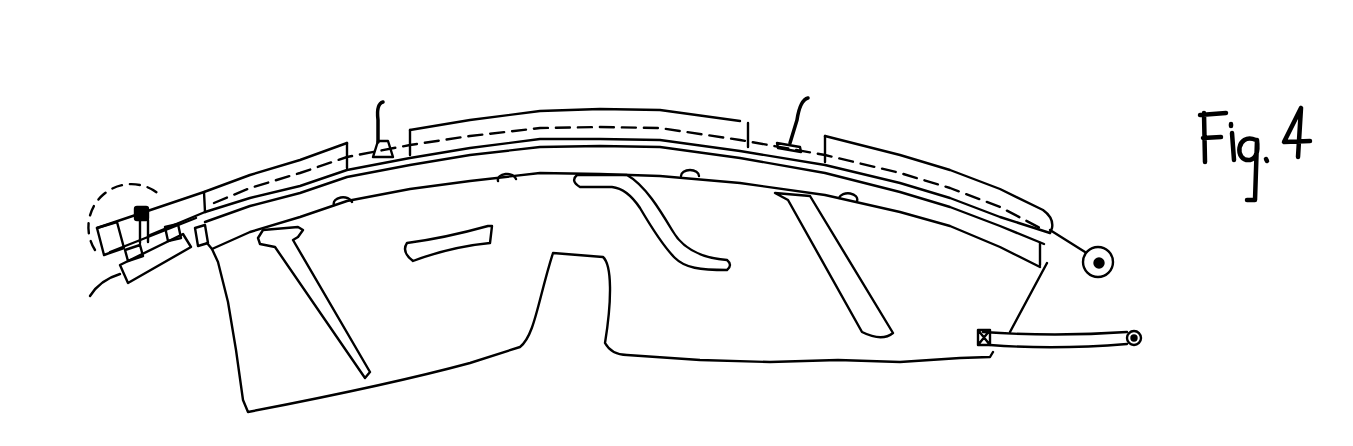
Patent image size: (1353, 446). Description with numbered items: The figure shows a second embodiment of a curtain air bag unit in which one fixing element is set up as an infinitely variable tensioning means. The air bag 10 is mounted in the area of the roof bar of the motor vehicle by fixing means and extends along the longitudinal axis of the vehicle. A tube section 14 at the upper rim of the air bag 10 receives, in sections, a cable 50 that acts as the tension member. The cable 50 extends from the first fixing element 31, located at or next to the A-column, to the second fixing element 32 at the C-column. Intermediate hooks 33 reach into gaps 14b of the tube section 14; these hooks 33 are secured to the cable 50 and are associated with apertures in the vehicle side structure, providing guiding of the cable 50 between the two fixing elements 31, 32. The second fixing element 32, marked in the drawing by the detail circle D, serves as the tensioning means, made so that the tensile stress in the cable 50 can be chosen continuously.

The air bag 10 is at (838, 348).
The tube section 14 is at (970, 187).
The gaps 14b is at (362, 150).
The first fixing element 31 is at (1117, 252).
The second fixing element 32 is at (152, 278).
The intermediate hooks 33 is at (383, 128).
The cable 50 is at (1062, 240).
The detail D is at (143, 188).